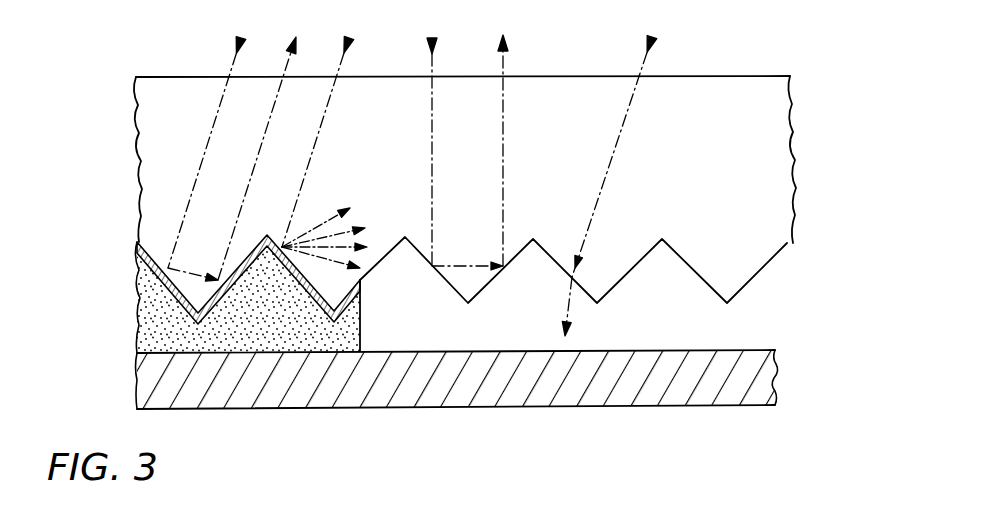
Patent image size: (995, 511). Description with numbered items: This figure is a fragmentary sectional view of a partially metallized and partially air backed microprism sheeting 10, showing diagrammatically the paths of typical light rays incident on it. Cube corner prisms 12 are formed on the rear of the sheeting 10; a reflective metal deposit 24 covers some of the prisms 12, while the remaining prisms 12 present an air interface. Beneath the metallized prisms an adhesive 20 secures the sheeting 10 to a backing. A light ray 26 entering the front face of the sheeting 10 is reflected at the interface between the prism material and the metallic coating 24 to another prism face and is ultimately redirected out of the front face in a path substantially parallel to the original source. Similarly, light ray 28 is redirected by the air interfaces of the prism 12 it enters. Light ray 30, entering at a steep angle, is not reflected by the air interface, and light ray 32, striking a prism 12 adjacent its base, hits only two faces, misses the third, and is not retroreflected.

The microprism sheeting 10 is at (800, 178).
The prisms 12 is at (460, 281).
The adhesive 20 is at (148, 323).
The reflective metal deposit 24 is at (140, 256).
The light ray 26 is at (229, 67).
The light ray 28 is at (433, 60).
The light ray 30 is at (645, 56).
The light ray 32 is at (345, 58).